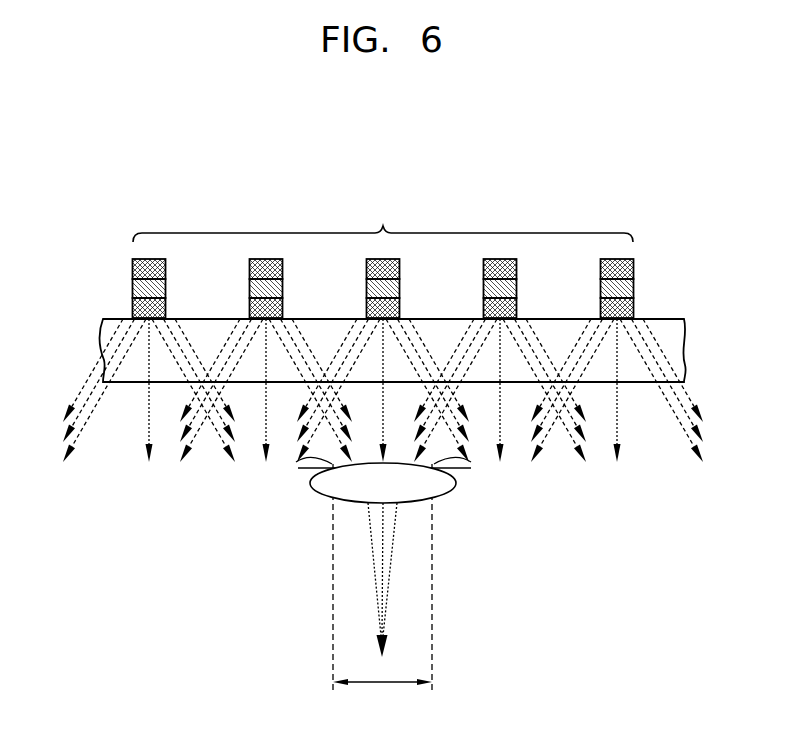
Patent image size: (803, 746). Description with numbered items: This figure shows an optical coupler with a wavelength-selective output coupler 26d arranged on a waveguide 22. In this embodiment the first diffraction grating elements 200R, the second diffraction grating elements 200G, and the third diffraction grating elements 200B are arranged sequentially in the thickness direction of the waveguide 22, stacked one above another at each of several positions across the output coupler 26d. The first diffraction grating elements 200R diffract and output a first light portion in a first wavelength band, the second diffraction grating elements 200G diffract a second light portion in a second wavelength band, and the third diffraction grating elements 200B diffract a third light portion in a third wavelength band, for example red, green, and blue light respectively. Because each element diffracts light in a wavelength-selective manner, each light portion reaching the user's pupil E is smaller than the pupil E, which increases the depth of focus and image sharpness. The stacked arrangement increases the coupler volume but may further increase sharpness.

The waveguide 22 is at (673, 350).
The third diffraction grating elements 200B is at (133, 269).
The second diffraction grating elements 200G is at (133, 290).
The first diffraction grating elements 200R is at (133, 309).
The wavelength-selective output coupler 26d is at (383, 218).
The pupil E is at (378, 706).